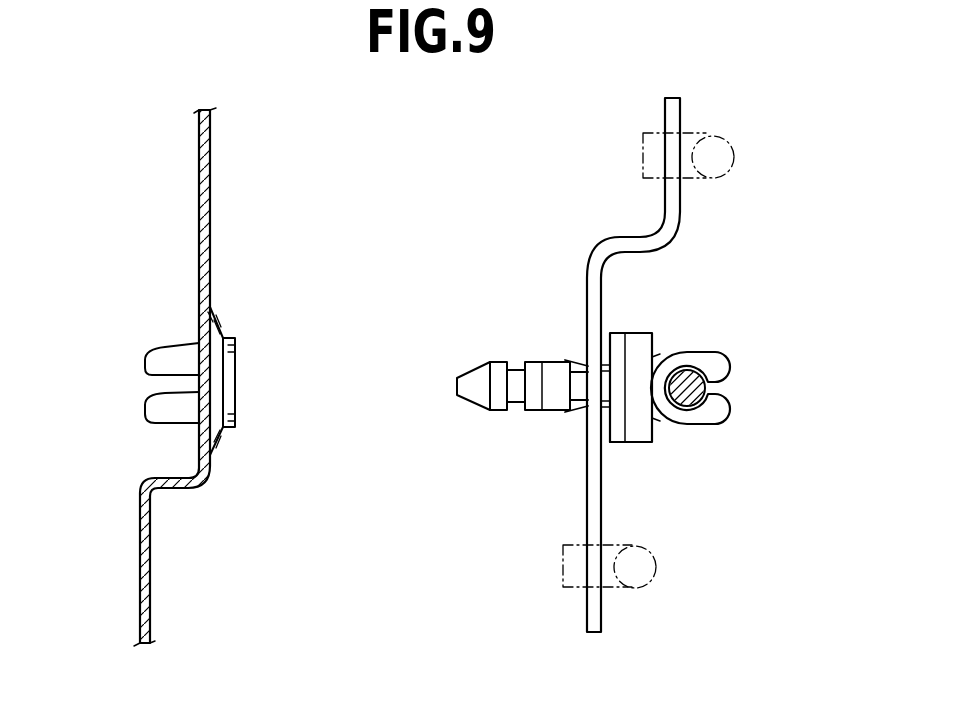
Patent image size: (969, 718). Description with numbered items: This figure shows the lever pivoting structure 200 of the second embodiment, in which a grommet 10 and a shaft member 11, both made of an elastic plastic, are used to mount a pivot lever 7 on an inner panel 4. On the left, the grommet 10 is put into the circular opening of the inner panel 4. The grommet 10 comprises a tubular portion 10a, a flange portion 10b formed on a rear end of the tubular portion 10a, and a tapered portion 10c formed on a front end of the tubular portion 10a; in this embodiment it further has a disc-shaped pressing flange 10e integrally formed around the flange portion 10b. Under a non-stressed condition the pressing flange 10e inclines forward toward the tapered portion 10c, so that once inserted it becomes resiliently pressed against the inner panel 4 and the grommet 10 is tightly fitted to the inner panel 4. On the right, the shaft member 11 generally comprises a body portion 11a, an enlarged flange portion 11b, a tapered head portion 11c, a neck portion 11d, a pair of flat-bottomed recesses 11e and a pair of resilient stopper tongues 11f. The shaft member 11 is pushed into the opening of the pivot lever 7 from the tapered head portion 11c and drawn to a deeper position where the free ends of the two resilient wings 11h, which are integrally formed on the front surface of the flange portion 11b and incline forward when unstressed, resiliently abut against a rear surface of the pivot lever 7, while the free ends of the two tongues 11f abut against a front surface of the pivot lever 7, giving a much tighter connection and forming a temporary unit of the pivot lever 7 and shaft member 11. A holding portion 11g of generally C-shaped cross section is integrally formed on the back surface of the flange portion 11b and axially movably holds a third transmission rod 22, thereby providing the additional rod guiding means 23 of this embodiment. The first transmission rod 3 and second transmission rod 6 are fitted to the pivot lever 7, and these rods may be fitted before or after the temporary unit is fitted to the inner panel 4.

The inner panel 4 is at (204, 192).
The grommet 10 is at (189, 380).
The tubular portion 10a is at (203, 323).
The flange portion 10b is at (229, 335).
The tapered portion 10c is at (162, 347).
The pressing flange 10e is at (220, 442).
The lever pivoting structure 200 is at (620, 353).
The pivot lever 7 is at (688, 104).
The second transmission rod 6 is at (719, 165).
The first transmission rod 3 is at (645, 551).
The shaft member 11 is at (587, 389).
The body portion 11a is at (553, 412).
The enlarged flange portion 11b is at (643, 444).
The tapered head portion 11c is at (470, 404).
The neck portion 11d is at (515, 412).
The flat-bottomed recesses 11e is at (560, 362).
The resilient stopper tongues 11f is at (575, 355).
The holding portion 11g is at (703, 352).
The resilient wings 11h is at (617, 444).
The third transmission rod 22 is at (700, 388).
The rod guiding means 23 is at (742, 354).